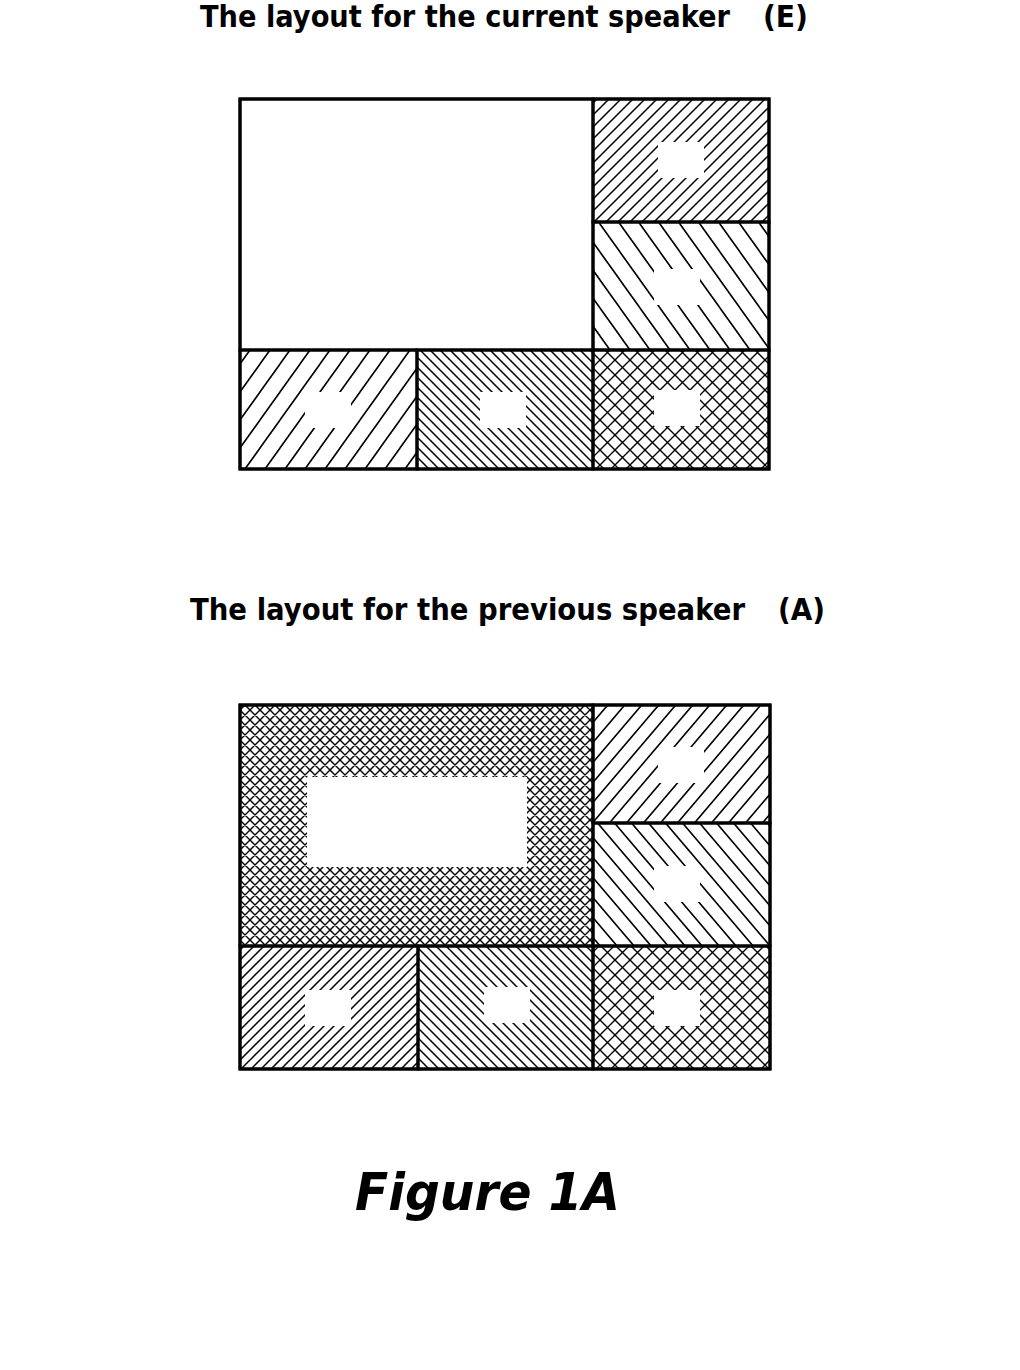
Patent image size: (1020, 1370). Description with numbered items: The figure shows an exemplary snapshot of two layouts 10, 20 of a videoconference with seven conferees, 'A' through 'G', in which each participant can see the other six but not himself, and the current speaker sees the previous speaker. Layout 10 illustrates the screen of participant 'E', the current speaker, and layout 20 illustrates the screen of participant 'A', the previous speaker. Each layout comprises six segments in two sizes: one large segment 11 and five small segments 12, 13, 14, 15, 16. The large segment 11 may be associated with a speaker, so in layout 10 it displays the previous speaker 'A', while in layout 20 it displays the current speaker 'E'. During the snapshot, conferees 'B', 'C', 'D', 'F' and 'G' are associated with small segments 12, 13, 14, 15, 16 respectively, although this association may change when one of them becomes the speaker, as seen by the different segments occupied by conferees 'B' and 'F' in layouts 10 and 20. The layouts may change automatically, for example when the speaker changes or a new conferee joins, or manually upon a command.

The layout 10 is at (398, 284).
The layout 20 is at (402, 887).
The large segment 11 is at (416, 497).
The small segment 12 is at (749, 461).
The small segment 13 is at (737, 584).
The small segment 14 is at (749, 709).
The small segment 15 is at (528, 732).
The small segment 16 is at (352, 736).